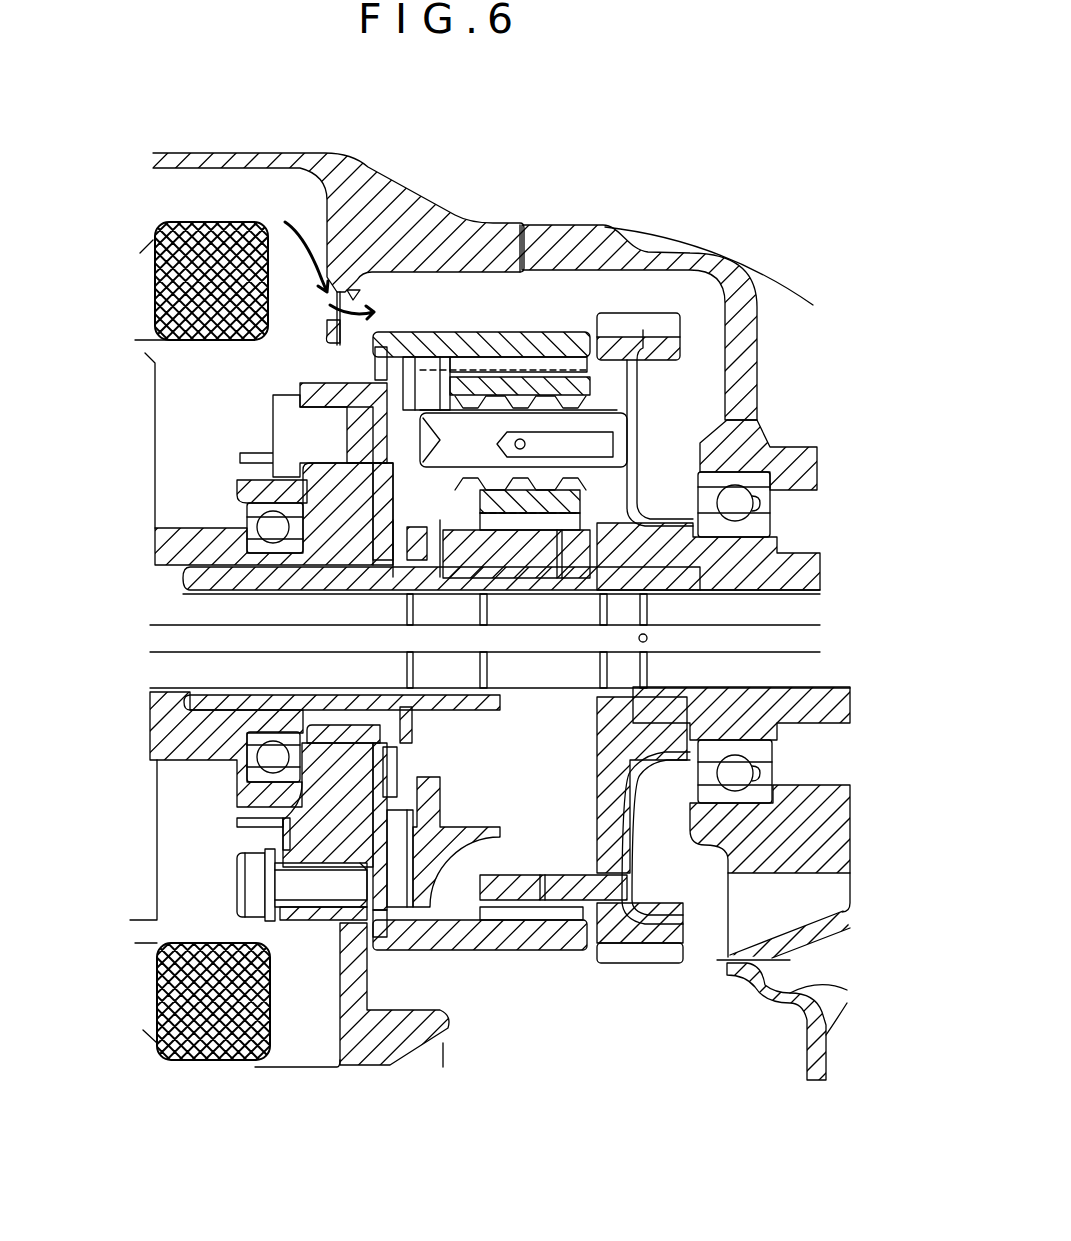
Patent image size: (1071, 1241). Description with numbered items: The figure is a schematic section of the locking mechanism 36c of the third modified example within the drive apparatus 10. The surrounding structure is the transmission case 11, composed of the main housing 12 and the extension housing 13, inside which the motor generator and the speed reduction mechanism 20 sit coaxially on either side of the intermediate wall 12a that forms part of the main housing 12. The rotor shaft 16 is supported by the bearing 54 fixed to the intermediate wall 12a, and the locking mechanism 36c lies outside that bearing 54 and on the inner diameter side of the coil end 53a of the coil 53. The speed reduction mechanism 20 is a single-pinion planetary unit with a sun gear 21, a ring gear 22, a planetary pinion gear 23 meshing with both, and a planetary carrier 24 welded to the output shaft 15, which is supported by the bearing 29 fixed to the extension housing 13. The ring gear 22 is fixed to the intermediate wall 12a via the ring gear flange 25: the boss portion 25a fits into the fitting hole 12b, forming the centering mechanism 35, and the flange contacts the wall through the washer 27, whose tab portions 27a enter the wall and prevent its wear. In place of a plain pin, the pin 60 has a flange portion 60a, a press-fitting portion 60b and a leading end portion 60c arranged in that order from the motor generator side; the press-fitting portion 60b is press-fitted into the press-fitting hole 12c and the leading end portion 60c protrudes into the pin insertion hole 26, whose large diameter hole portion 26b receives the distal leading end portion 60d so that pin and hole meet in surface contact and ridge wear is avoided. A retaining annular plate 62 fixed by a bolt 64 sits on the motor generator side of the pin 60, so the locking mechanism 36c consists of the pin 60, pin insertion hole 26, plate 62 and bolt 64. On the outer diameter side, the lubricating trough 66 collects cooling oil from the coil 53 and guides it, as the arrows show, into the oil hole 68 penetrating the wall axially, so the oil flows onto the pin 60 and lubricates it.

The drive apparatus 10 is at (749, 154).
The transmission case 11 is at (580, 147).
The main housing 12 is at (490, 225).
The intermediate wall 12a is at (343, 280).
The fitting hole 12b is at (357, 570).
The press-fitting hole 12c is at (243, 490).
The extension housing 13 is at (582, 228).
The output shaft 15 is at (807, 563).
The rotor shaft 16 is at (175, 728).
The speed reduction mechanism 20 is at (478, 305).
The sun gear 21 is at (570, 737).
The ring gear 22 is at (545, 340).
The planetary pinion gear 23 is at (562, 385).
The planetary carrier 24 is at (505, 321).
The ring gear flange 25 is at (407, 423).
The boss portion 25a is at (400, 592).
The pin insertion hole 26 is at (397, 417).
The large diameter hole portion 26b is at (450, 472).
The washer 27 is at (410, 548).
The tab portion 27a is at (362, 548).
The bearing 29 is at (760, 480).
The centering mechanism 35 is at (112, 587).
The locking mechanism 36c is at (70, 372).
The coil 53 is at (191, 214).
The coil end 53a is at (228, 220).
The bearing 54 is at (253, 772).
The pin 60 is at (283, 470).
The flange portion 60a is at (290, 390).
The press-fitting portion 60b is at (343, 413).
The leading end portion 60c is at (388, 345).
The distal leading end portion 60d is at (413, 388).
The plate 62 is at (393, 432).
The bolt 64 is at (237, 885).
The lubricating trough 66 is at (330, 328).
The oil hole 68 is at (358, 290).